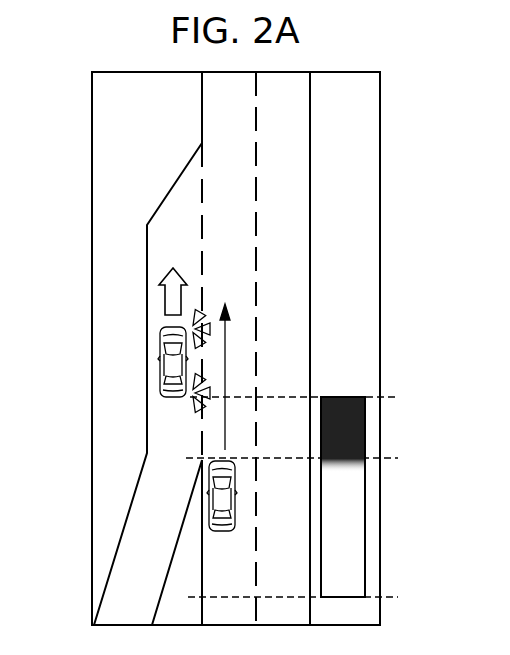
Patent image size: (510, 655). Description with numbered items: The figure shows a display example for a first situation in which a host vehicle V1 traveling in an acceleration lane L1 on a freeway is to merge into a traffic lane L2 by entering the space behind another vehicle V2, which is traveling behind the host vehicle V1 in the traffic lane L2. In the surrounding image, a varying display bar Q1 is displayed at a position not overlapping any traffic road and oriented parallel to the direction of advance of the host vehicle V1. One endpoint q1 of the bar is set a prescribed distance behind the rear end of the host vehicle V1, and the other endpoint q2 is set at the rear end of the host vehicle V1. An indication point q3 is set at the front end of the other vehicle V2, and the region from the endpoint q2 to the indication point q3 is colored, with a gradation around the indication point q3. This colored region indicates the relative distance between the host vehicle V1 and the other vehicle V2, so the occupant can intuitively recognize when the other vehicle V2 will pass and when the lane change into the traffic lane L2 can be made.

The acceleration lane L1 is at (178, 202).
The traffic lane L2 is at (212, 106).
The host vehicle V1 is at (172, 366).
The other vehicle V2 is at (222, 532).
The varying display bar Q1 is at (365, 428).
The endpoint q1 is at (309, 597).
The endpoint q2 is at (311, 397).
The indication point q3 is at (309, 459).